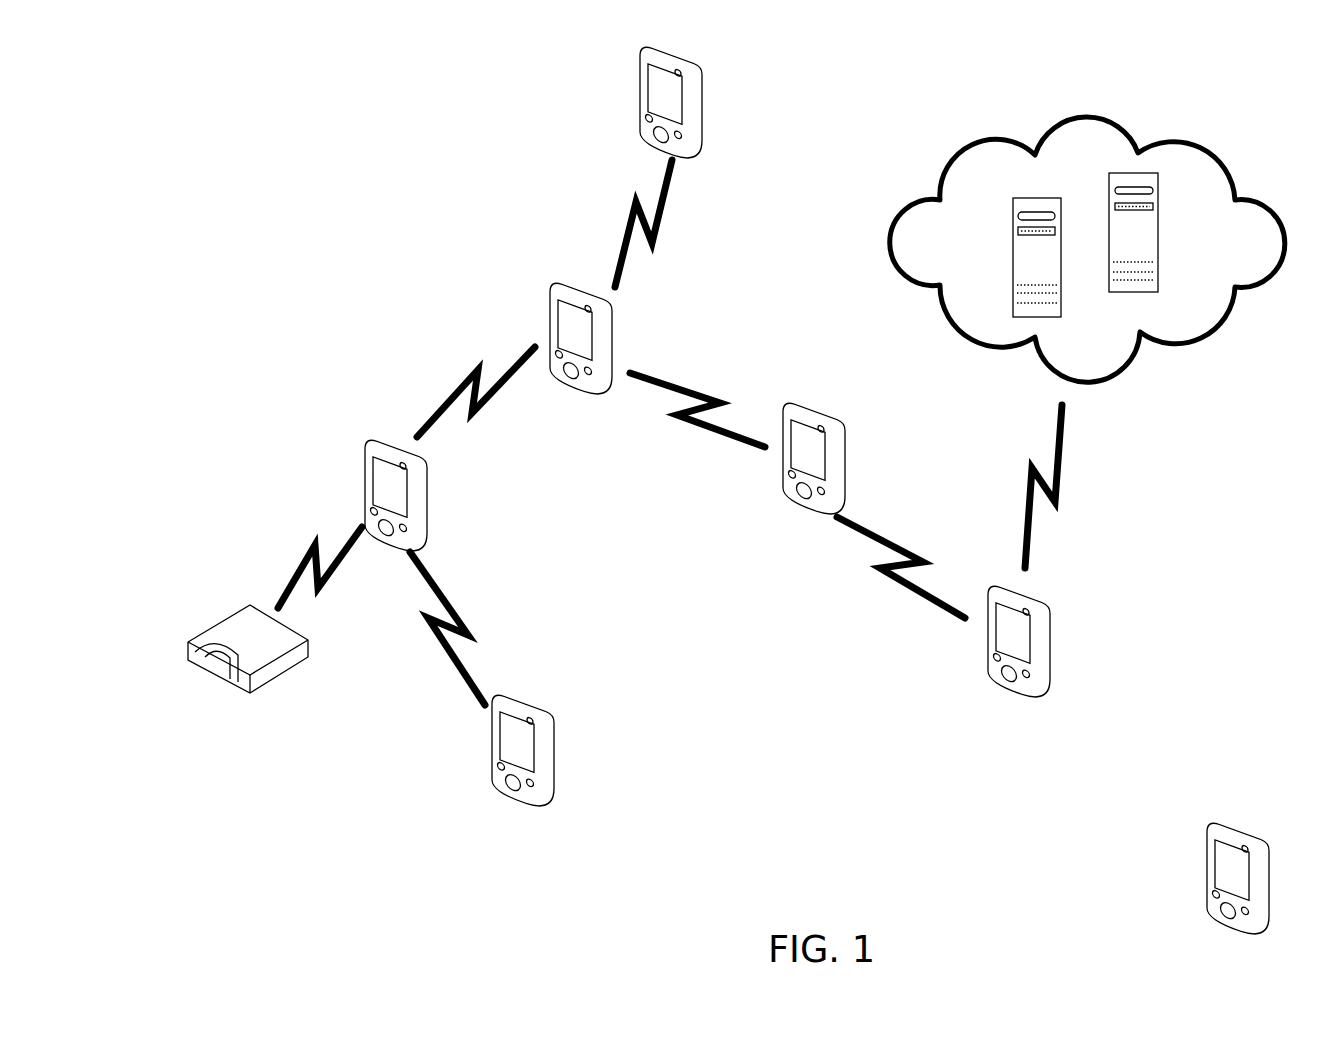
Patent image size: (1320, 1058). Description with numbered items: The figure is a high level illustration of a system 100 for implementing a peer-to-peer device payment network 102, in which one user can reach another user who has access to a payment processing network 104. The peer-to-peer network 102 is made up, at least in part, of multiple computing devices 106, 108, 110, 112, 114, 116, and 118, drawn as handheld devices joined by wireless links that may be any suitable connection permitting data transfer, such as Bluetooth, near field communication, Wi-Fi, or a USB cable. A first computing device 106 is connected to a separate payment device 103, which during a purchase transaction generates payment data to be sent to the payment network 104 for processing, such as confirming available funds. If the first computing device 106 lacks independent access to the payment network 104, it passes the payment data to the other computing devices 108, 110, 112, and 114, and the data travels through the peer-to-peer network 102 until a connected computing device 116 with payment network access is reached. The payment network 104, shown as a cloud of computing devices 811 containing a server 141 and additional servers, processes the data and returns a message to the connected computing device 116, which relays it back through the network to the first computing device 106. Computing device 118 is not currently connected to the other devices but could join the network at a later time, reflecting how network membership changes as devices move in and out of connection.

The system 100 is at (360, 158).
The peer-to-peer device payment network 102 is at (599, 557).
The payment device 103 is at (252, 625).
The payment processing network 104 is at (1128, 438).
The first computing device 106 is at (380, 453).
The computing device 108 is at (498, 777).
The computing device 110 is at (562, 293).
The computing device 112 is at (645, 102).
The computing device 114 is at (800, 412).
The connected computing device 116 is at (1002, 595).
The computing device 118 is at (1220, 825).
The server 141 is at (1025, 265).
The cloud of computing devices 811 is at (1087, 248).